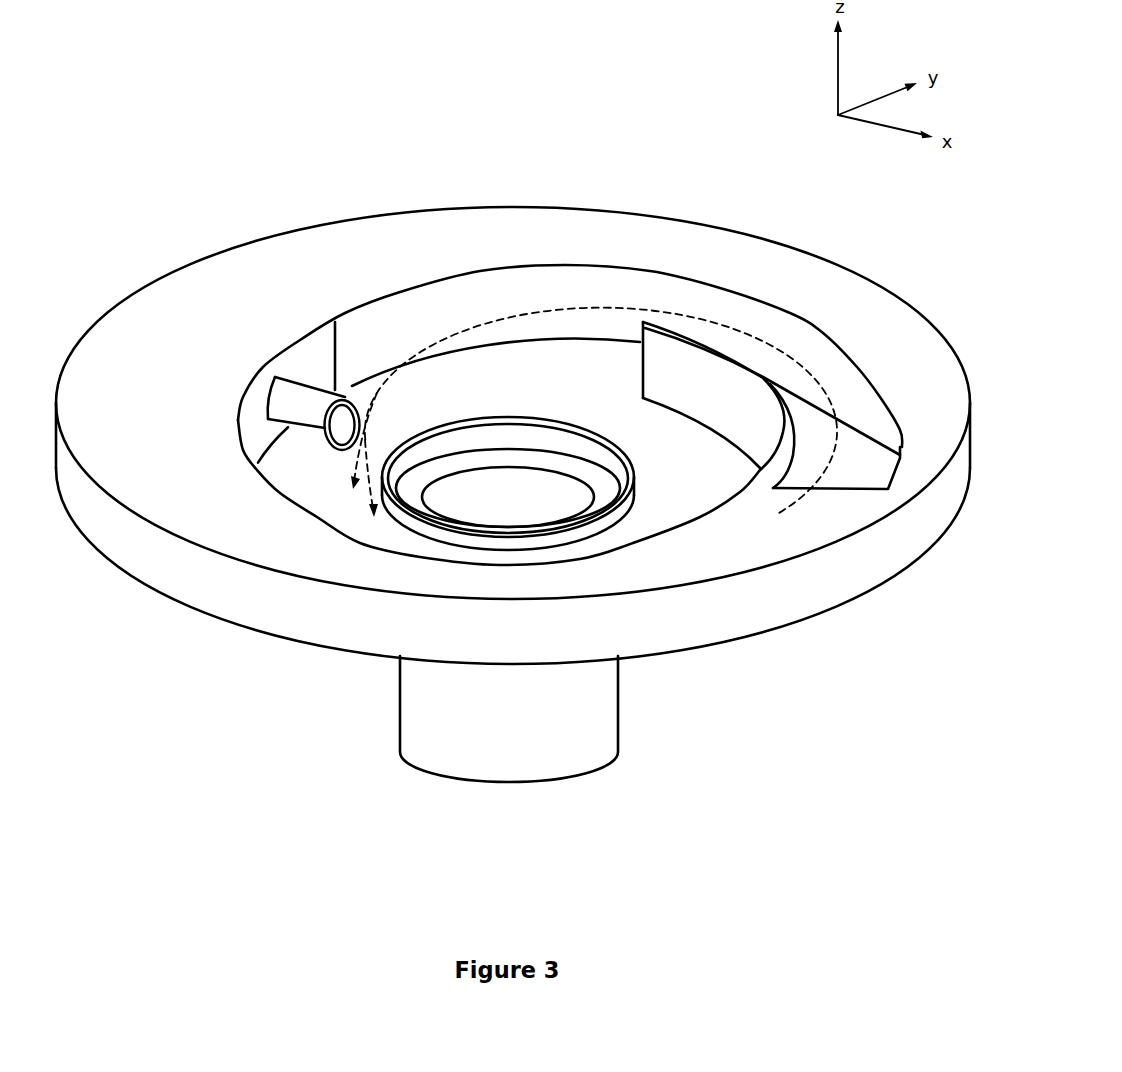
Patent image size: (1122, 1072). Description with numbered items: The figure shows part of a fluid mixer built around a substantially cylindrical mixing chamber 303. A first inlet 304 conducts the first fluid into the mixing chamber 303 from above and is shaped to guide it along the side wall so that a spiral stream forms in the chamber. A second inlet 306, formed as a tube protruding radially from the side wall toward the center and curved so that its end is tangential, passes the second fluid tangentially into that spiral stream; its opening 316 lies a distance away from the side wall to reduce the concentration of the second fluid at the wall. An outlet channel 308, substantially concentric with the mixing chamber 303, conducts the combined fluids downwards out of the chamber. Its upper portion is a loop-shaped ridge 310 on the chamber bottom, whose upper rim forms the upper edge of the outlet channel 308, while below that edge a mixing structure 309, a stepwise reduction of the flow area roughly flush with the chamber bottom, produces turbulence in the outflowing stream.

The mixing chamber 303 is at (533, 370).
The first inlet 304 is at (810, 368).
The second inlet 306 is at (315, 400).
The outlet channel 308 is at (492, 517).
The mixing structure 309 is at (583, 483).
The loop-shaped ridge 310 is at (620, 448).
The opening 316 is at (342, 432).